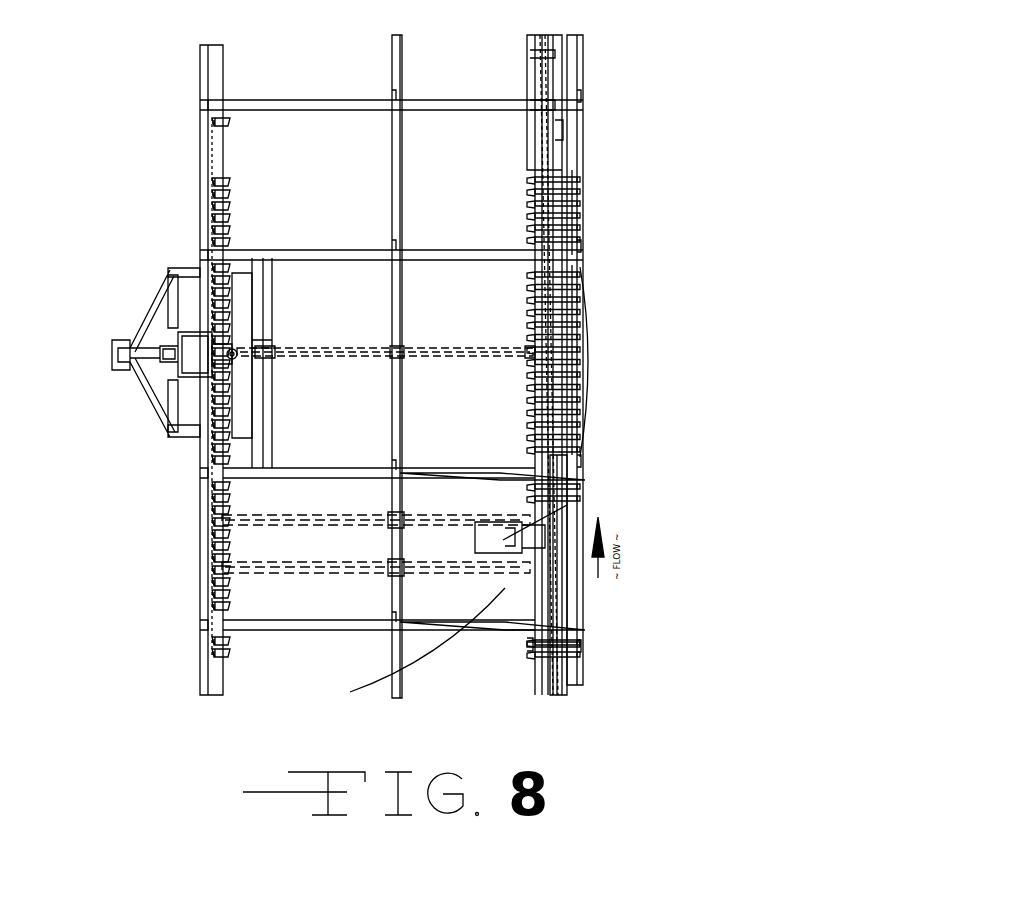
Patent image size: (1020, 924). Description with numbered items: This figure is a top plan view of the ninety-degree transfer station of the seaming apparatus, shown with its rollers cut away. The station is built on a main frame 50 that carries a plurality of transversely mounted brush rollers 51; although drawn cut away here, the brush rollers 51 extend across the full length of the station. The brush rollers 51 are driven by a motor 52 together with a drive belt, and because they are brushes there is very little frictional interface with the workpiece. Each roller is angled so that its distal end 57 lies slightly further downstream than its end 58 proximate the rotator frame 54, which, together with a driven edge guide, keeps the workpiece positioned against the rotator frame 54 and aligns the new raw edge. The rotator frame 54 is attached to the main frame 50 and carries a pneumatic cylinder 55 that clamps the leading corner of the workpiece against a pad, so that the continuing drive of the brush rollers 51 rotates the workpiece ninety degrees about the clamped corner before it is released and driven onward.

The main frame 50 is at (396, 158).
The brush rollers 51 is at (582, 296).
The motor 52 is at (565, 498).
The rotator frame 54 is at (150, 400).
The pneumatic cylinder 55 is at (236, 352).
The distal end 57 is at (586, 368).
The end proximate the rotator frame 58 is at (233, 376).